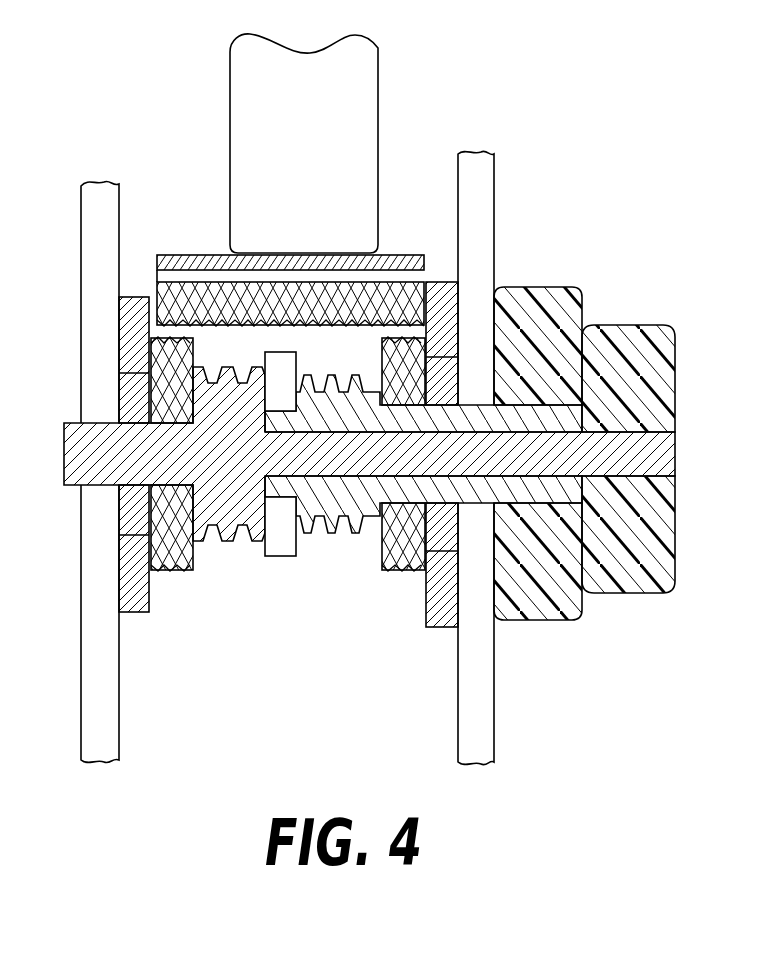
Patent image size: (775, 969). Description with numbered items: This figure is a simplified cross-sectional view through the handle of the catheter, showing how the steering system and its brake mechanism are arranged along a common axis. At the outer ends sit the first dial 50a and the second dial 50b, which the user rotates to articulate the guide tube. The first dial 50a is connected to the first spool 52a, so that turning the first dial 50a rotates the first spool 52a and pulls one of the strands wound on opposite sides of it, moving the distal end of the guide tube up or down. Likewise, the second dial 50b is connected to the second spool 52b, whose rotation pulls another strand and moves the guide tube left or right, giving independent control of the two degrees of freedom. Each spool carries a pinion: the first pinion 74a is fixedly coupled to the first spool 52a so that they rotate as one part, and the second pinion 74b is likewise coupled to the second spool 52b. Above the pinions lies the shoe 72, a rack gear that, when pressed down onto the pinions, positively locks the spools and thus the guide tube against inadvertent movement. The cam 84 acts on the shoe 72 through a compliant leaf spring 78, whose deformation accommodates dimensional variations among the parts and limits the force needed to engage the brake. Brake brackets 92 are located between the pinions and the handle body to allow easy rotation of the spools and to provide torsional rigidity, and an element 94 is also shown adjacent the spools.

The first dial 50a is at (562, 292).
The second dial 50b is at (664, 380).
The first spool 52a is at (333, 520).
The second spool 52b is at (228, 542).
The shoe 72 is at (410, 290).
The first pinion 74a is at (397, 571).
The second pinion 74b is at (176, 571).
The leaf spring 78 is at (187, 262).
The cam 84 is at (320, 161).
The brake bracket 92 is at (128, 297).
The spacer ring 94 is at (283, 556).